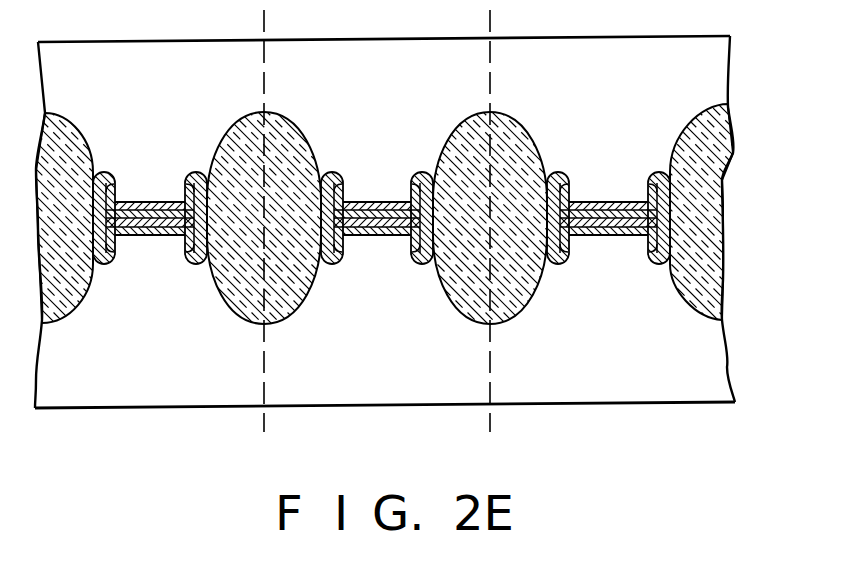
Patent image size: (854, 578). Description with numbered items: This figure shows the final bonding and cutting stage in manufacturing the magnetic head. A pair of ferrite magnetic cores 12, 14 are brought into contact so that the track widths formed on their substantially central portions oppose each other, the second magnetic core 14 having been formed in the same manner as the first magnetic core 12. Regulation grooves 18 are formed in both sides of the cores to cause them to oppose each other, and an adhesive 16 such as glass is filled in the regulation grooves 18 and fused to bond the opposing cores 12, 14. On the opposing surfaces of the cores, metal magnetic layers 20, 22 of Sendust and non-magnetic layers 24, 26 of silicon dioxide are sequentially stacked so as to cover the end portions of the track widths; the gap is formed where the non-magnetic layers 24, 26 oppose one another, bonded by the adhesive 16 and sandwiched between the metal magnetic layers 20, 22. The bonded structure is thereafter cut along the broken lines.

The magnetic core 12 is at (731, 62).
The magnetic core 14 is at (713, 372).
The adhesive 16 is at (717, 233).
The regulation groove 18 is at (534, 121).
The metal magnetic layer 20 is at (647, 167).
The metal magnetic layer 22 is at (643, 277).
The non-magnetic layer 24 is at (723, 206).
The non-magnetic layer 26 is at (723, 283).